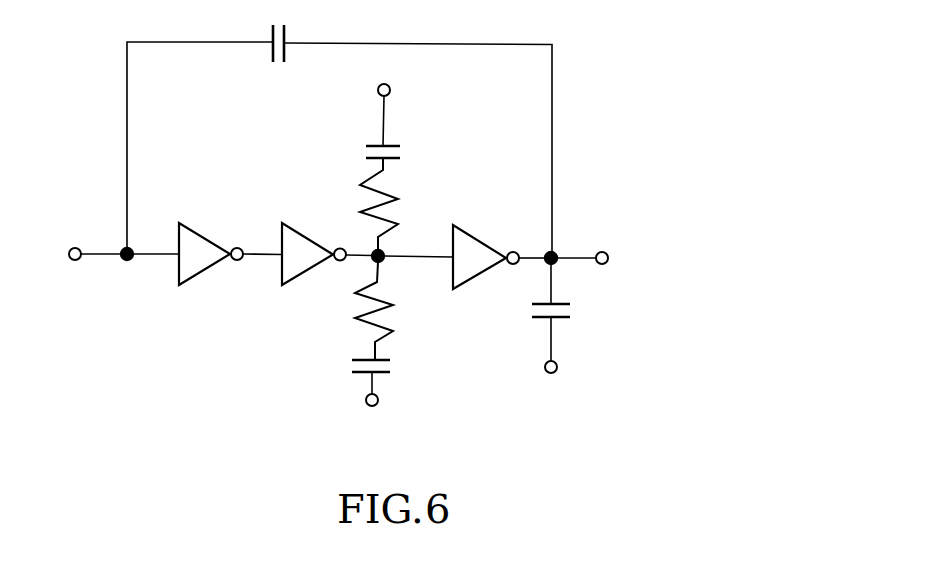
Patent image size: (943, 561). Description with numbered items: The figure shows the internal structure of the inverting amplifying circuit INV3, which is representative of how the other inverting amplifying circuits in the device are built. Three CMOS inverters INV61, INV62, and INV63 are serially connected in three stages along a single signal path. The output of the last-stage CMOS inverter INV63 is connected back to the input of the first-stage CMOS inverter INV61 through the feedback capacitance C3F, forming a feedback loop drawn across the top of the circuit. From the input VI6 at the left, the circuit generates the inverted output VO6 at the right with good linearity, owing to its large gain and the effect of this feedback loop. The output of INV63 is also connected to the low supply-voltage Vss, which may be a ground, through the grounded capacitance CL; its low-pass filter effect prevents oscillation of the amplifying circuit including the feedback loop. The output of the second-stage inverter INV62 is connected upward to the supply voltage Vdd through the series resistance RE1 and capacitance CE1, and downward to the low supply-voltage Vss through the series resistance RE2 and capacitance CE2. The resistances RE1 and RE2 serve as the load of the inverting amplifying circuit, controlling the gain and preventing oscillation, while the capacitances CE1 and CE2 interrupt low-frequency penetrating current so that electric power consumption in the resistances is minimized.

The inverting amplifying circuit INV3 is at (612, 64).
The CMOS inverter INV61 is at (206, 232).
The CMOS inverter INV62 is at (282, 275).
The CMOS inverter INV63 is at (470, 274).
The feedback capacitance C3F is at (280, 63).
The capacitance CE1 is at (398, 146).
The capacitance CE2 is at (357, 375).
The resistance RE1 is at (412, 204).
The resistance RE2 is at (335, 311).
The grounded capacitance CL is at (575, 294).
The input VI6 is at (83, 229).
The inverted output VO6 is at (588, 237).
The supply voltage Vdd is at (424, 107).
The low supply-voltage Vss is at (461, 382).